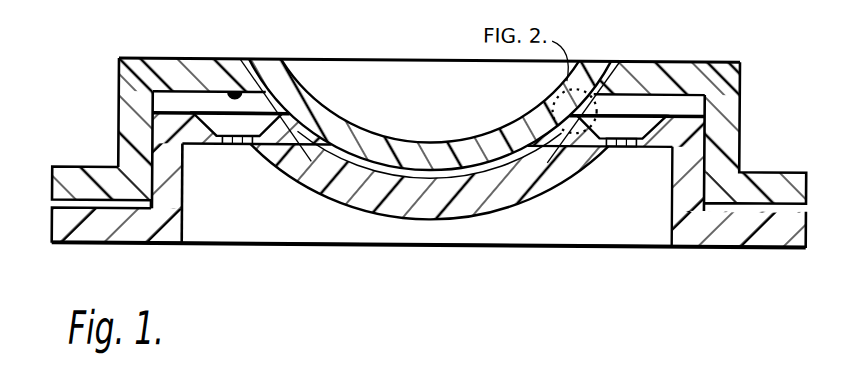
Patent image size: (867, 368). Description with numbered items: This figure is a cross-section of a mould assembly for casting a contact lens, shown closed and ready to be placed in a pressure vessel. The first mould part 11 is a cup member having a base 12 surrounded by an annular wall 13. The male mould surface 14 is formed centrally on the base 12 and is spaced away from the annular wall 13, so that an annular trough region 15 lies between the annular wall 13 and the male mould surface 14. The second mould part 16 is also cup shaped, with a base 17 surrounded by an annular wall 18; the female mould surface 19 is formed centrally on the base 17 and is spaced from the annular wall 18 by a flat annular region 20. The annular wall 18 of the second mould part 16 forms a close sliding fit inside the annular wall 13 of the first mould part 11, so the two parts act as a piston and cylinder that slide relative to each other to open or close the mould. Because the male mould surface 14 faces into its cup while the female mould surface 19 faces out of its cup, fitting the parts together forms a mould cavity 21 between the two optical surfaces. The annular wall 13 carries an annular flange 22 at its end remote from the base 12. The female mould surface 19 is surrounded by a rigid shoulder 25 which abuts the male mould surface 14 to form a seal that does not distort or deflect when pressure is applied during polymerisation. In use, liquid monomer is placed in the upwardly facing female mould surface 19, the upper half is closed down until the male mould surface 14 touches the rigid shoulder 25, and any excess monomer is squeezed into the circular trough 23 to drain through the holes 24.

The first mould part 11 is at (720, 116).
The base 12 is at (667, 72).
The annular wall 13 is at (127, 108).
The male mould surface 14 is at (364, 155).
The annular trough region 15 is at (238, 84).
The second mould part 16 is at (698, 230).
The base 17 is at (650, 150).
The annular wall 18 is at (185, 200).
The female mould surface 19 is at (434, 180).
The flat annular region 20 is at (426, 213).
The mould cavity 21 is at (427, 139).
The annular flange 22 is at (72, 167).
The circular trough 23 is at (258, 118).
The holes 24 is at (236, 145).
The rigid shoulder 25 is at (597, 96).